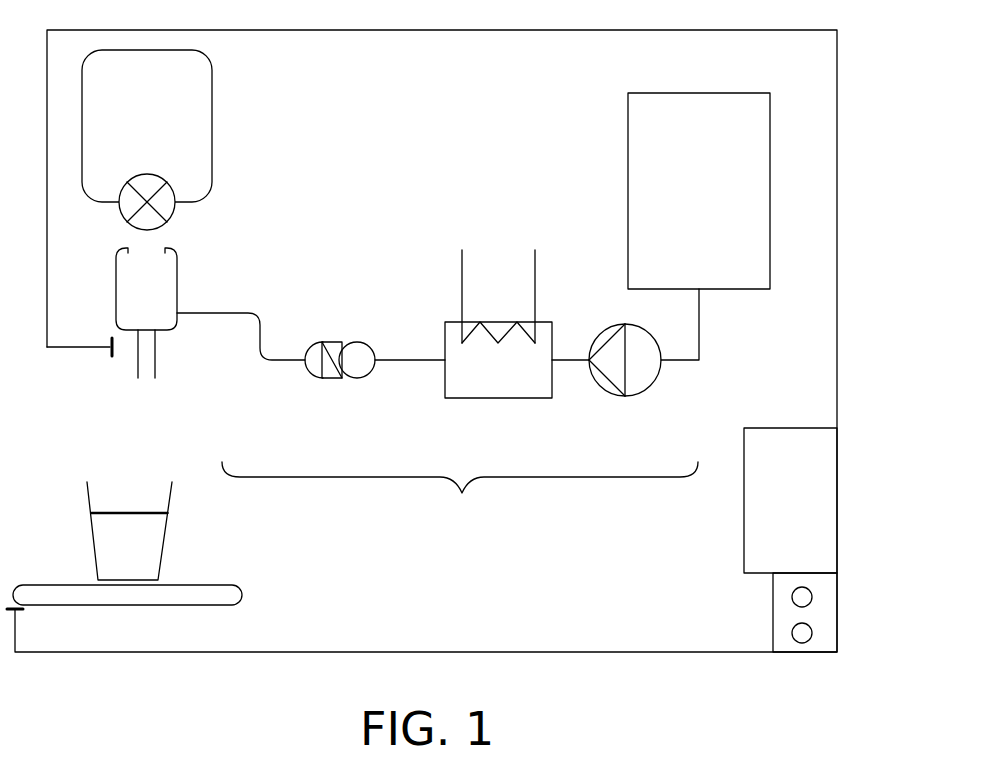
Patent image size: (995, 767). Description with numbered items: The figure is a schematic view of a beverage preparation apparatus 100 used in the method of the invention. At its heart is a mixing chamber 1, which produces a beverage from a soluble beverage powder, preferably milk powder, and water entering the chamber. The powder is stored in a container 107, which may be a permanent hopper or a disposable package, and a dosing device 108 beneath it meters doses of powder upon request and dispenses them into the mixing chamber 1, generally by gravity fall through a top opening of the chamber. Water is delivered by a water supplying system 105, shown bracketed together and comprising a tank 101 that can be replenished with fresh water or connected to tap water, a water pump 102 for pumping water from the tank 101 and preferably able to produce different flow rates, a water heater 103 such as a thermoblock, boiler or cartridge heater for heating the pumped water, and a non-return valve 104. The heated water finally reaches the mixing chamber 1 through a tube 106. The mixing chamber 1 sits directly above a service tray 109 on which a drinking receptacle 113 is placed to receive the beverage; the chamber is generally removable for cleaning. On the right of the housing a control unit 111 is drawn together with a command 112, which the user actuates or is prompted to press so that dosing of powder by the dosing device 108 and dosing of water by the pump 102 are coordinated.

The mixing chamber 1 is at (177, 272).
The beverage preparation apparatus 100 is at (837, 150).
The tank 101 is at (628, 142).
The water pump 102 is at (658, 380).
The water heater 103 is at (494, 398).
The non-return valve 104 is at (335, 342).
The water supplying system 105 is at (460, 495).
The tube 106 is at (222, 313).
The container 107 is at (212, 124).
The dosing device 108 is at (175, 205).
The service tray 109 is at (242, 595).
The control unit 111 is at (744, 503).
The command 112 is at (773, 607).
The drinking receptacle 113 is at (90, 537).